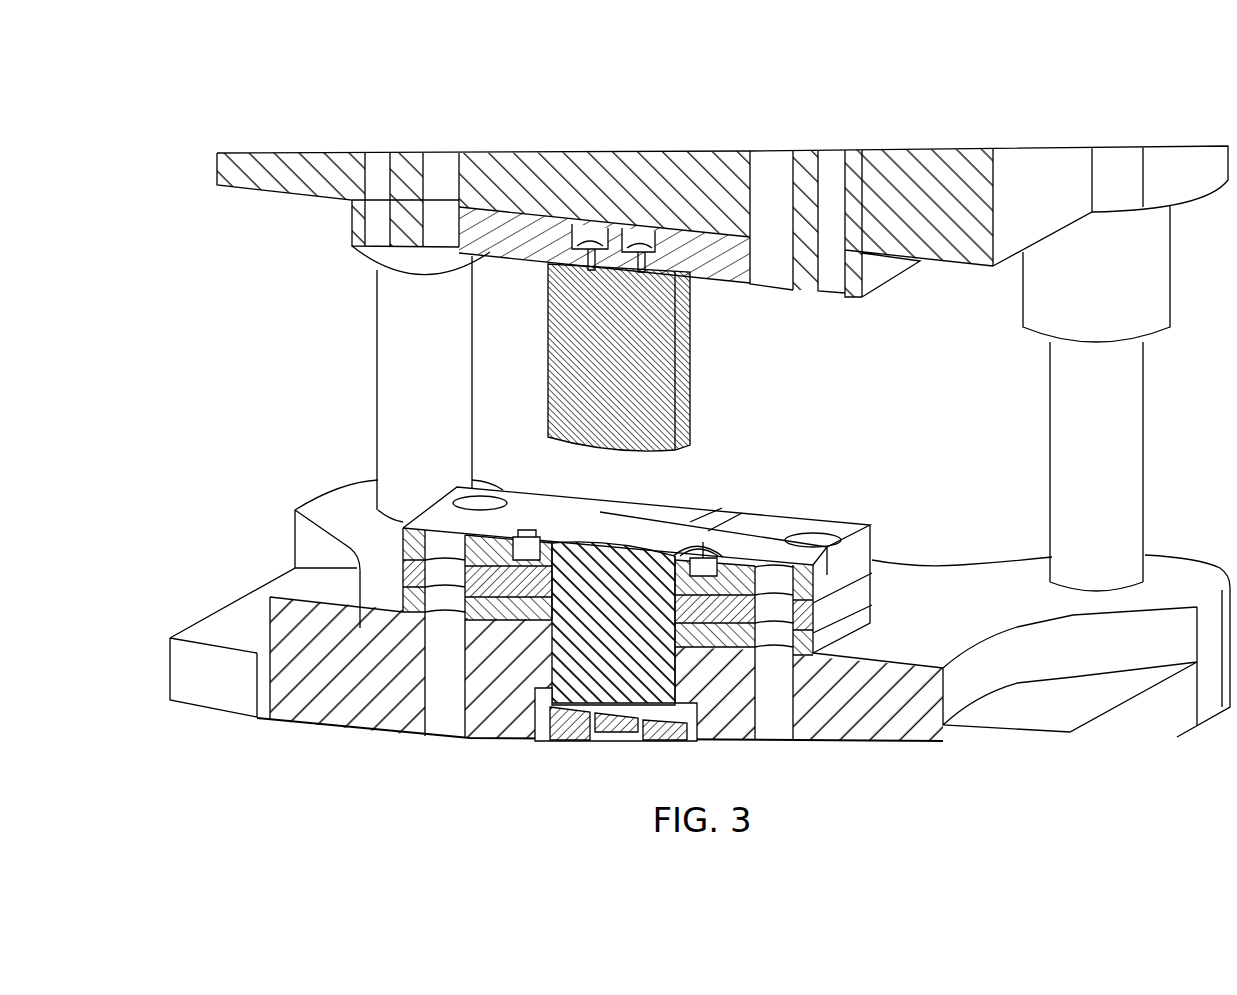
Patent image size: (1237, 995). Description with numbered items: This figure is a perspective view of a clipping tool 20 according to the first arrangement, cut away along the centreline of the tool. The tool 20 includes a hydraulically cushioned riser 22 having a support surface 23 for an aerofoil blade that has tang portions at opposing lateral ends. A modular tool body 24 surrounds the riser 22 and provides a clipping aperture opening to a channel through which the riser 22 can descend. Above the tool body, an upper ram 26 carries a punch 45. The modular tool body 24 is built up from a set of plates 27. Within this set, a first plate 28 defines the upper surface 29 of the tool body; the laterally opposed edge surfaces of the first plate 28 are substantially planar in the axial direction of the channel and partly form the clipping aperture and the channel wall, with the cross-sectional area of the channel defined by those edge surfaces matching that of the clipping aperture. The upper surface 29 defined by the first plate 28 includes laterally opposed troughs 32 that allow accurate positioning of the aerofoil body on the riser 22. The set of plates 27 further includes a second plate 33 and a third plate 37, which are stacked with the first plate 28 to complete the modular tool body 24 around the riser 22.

The tool 20 is at (1025, 131).
The hydraulically cushioned riser 22 is at (480, 487).
The support surface 23 is at (550, 545).
The modular tool body 24 is at (884, 495).
The upper ram 26 is at (724, 272).
The set of plates 27 is at (340, 567).
The first plate 28 is at (460, 547).
The upper surface 29 is at (603, 536).
The troughs 32 is at (707, 593).
The second plate 33 is at (865, 590).
The third plate 37 is at (845, 627).
The punch 45 is at (597, 408).